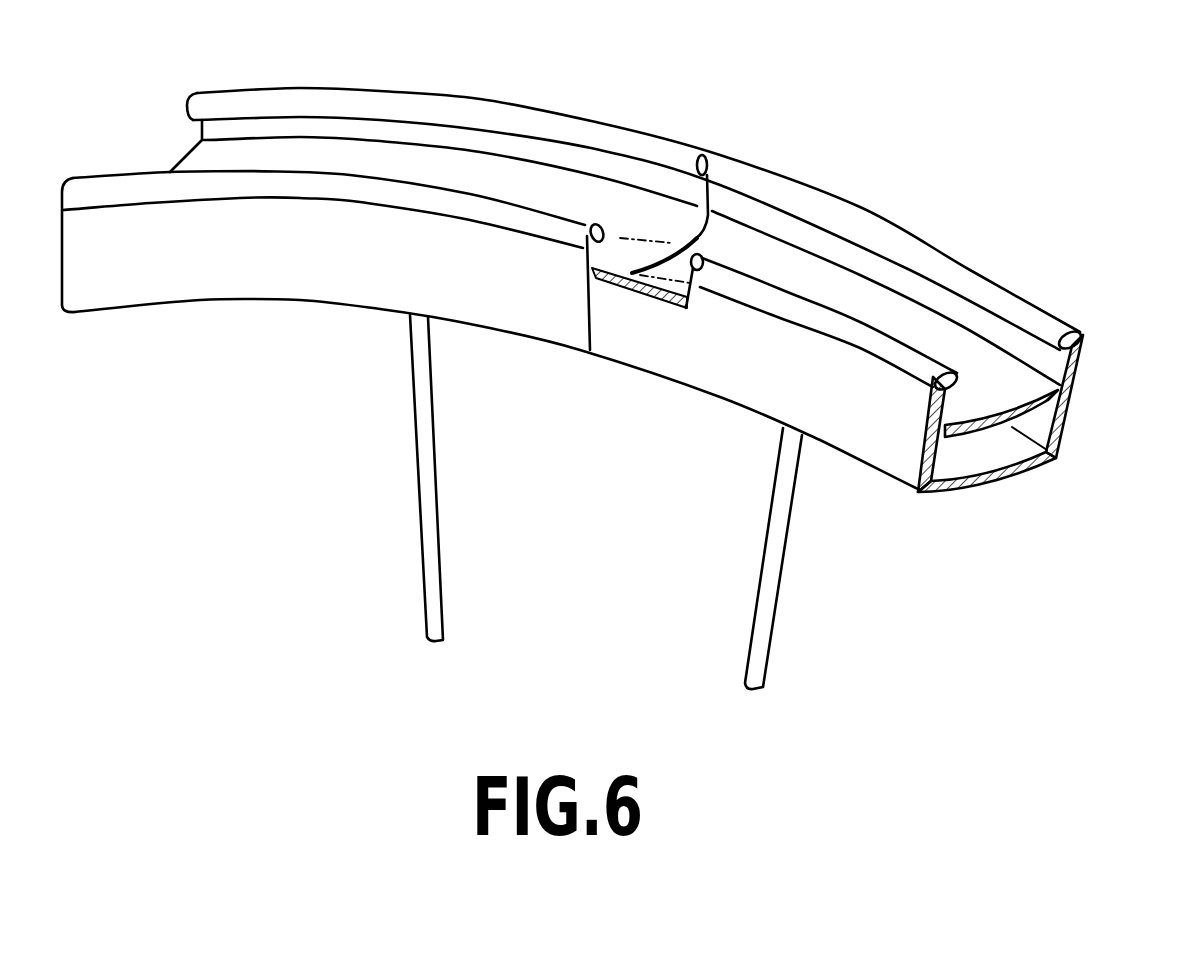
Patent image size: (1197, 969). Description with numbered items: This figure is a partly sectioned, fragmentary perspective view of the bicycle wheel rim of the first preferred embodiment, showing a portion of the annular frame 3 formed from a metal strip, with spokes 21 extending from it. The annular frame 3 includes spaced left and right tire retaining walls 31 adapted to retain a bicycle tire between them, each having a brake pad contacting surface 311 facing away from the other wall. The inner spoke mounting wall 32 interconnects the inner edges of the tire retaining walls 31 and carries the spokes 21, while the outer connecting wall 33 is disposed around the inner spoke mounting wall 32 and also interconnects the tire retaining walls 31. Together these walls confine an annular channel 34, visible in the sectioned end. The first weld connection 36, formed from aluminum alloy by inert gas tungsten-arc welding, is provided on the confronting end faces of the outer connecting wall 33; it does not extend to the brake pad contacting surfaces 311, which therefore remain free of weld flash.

The annular frame 3 is at (441, 95).
The first weld connection 36 is at (697, 240).
The brake pad contacting surface 311 is at (517, 315).
The spokes 21 is at (773, 553).
The tire retaining walls 31 is at (917, 490).
The outer connecting wall 33 is at (1003, 375).
The inner spoke mounting wall 32 is at (1027, 480).
The annular channel 34 is at (970, 462).